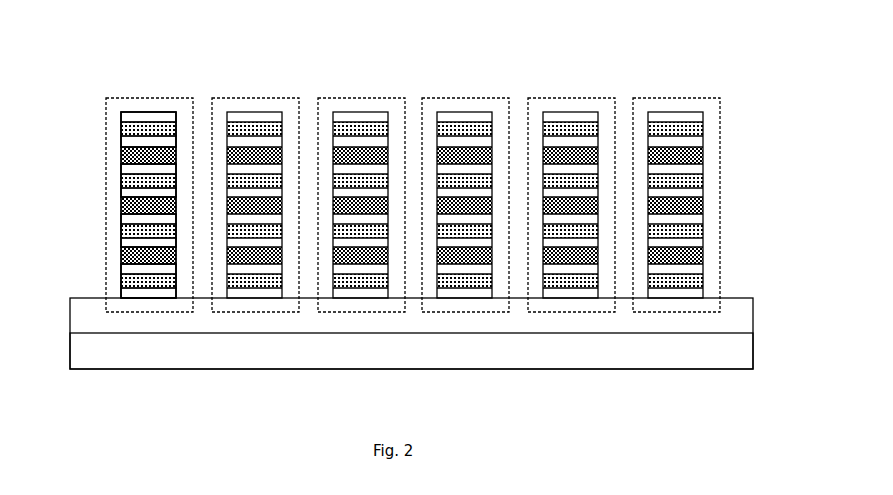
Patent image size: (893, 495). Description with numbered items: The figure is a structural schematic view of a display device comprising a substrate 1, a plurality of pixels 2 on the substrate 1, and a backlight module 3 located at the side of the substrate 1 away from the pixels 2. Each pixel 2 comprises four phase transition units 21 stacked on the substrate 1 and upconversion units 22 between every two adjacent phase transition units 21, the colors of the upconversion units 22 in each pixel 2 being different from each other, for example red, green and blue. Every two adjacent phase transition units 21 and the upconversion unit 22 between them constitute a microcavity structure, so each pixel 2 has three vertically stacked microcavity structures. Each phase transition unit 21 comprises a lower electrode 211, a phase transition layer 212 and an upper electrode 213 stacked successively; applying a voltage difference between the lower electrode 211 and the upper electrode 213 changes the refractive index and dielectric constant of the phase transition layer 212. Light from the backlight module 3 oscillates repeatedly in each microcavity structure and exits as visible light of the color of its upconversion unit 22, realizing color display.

The substrate 1 is at (553, 320).
The pixel 2 is at (162, 98).
The backlight module 3 is at (452, 350).
The phase transition unit 21 is at (59, 296).
The upconversion unit 22 is at (121, 256).
The lower electrode 211 is at (121, 293).
The phase transition layer 212 is at (121, 281).
The upper electrode 213 is at (121, 269).